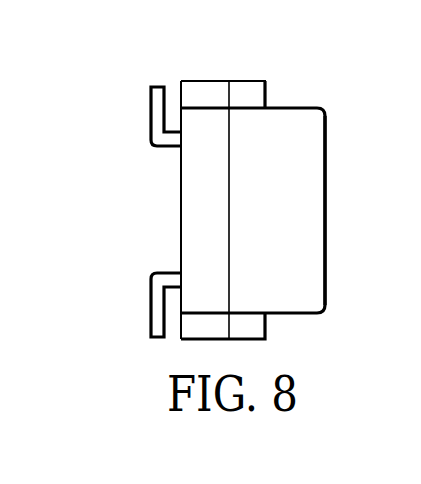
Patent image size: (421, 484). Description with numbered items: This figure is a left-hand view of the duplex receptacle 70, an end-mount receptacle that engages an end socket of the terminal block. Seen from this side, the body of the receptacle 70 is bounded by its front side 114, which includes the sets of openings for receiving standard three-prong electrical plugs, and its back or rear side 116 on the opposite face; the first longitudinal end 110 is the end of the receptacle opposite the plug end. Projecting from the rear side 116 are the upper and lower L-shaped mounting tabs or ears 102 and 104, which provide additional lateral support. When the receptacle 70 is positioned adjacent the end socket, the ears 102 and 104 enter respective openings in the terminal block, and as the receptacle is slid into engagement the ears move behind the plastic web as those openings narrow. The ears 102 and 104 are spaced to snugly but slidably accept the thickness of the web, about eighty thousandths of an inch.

The duplex receptacle 70 is at (335, 76).
The upper L-shaped mounting ear 102 is at (152, 107).
The lower L-shaped mounting ear 104 is at (148, 297).
The first longitudinal end 110 is at (295, 242).
The front side 114 is at (328, 188).
The rear side 116 is at (171, 218).